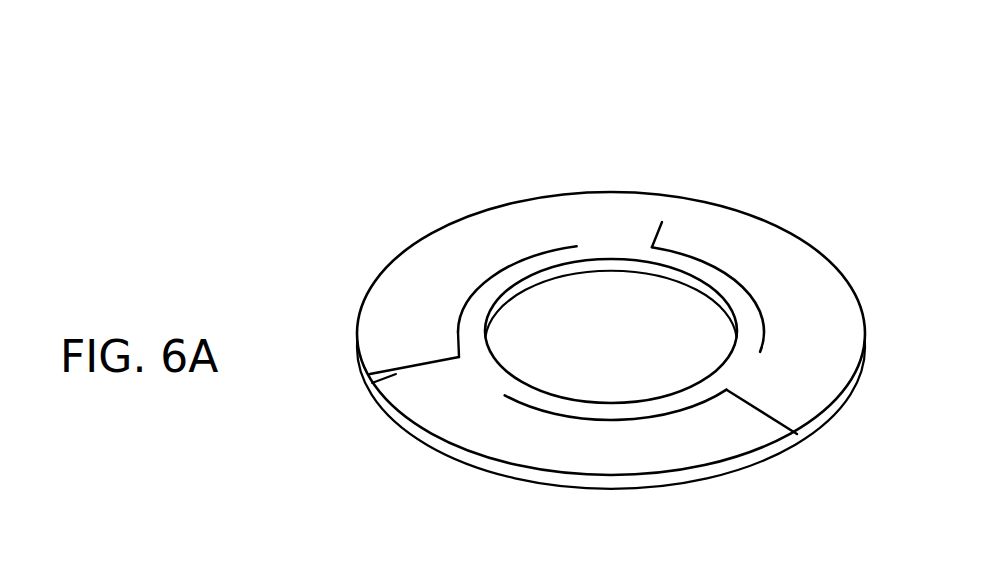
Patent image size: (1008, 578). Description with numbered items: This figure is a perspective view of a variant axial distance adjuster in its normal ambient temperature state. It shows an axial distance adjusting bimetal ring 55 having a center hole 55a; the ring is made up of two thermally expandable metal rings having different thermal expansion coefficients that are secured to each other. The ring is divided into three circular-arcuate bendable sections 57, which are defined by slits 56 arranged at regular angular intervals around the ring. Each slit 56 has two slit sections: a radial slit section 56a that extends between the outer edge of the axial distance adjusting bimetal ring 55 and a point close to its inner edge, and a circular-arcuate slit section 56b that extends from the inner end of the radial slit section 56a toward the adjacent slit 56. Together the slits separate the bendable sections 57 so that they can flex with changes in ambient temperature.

The axial distance adjusting bimetal ring 55 is at (388, 122).
The center hole 55a is at (670, 285).
The slit 56 is at (483, 282).
The radial slit section 56a is at (665, 226).
The circular-arcuate slit section 56b is at (537, 253).
The circular-arcuate bendable section 57 is at (737, 243).